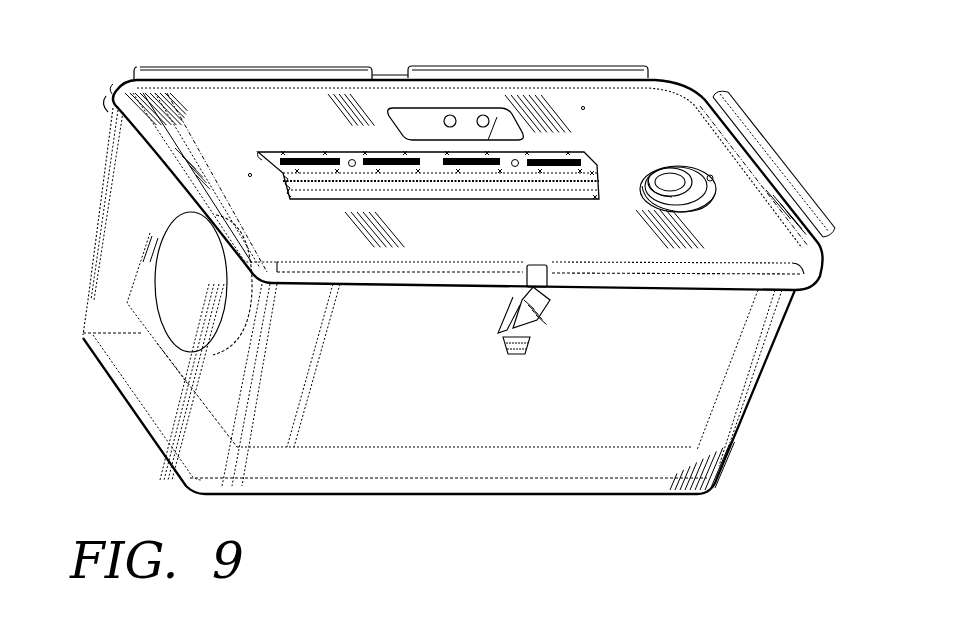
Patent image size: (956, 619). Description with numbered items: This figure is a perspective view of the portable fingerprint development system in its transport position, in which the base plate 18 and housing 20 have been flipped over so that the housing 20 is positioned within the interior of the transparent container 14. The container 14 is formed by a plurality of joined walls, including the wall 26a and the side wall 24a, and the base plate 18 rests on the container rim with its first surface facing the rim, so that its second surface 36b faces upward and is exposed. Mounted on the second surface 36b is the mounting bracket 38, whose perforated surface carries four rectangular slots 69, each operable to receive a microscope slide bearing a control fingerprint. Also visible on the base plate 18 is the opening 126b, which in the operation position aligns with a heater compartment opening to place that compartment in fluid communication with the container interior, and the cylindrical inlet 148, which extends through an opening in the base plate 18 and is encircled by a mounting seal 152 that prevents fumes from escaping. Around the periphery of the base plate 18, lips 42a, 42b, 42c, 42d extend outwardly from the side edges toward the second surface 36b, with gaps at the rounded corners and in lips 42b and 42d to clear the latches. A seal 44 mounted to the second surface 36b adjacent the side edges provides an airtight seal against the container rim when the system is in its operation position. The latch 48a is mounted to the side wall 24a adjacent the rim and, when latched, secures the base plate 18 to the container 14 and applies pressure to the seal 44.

The transparent container 14 is at (757, 380).
The base plate 18 is at (217, 129).
The housing 20 is at (372, 392).
The side wall 24a is at (624, 468).
The wall 26a is at (102, 292).
The second surface 36b is at (632, 134).
The mounting bracket 38 is at (298, 150).
The lip 42a is at (116, 124).
The lip 42b is at (236, 66).
The lip 42c is at (750, 133).
The lip 42d is at (458, 262).
The seal 44 is at (674, 80).
The latch 48a is at (531, 332).
The rectangular slots 69 is at (356, 160).
The opening 126b is at (432, 108).
The cylindrical inlet 148 is at (690, 170).
The mounting seal 152 is at (712, 202).